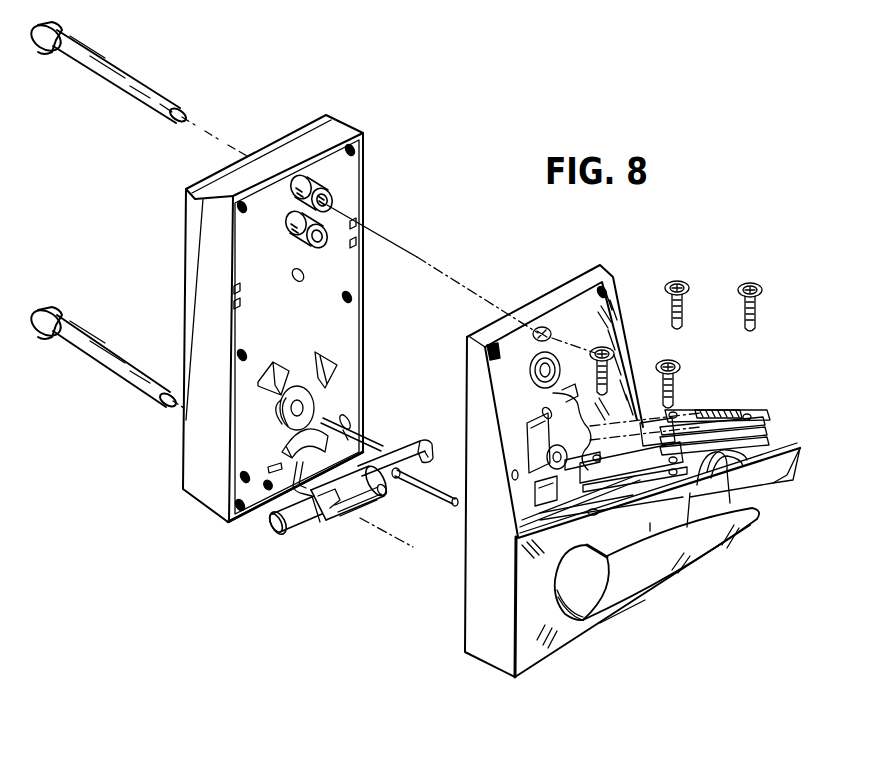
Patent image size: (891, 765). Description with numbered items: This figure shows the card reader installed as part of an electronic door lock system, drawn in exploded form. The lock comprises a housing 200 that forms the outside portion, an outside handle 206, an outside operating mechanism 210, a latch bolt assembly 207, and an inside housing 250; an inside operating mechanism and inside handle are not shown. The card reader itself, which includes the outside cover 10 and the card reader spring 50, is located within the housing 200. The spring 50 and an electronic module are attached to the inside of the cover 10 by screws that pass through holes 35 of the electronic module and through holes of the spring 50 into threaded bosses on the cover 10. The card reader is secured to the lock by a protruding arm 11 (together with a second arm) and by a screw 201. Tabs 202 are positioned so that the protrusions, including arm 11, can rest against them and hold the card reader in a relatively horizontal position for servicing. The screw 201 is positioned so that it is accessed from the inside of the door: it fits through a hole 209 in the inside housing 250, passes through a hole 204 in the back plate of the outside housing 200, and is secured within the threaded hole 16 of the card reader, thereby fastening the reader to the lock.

The cover 10 is at (786, 455).
The protruding arm 11 is at (548, 510).
The threaded hole 16 is at (720, 485).
The holes 35 is at (608, 393).
The card reader spring 50 is at (778, 432).
The housing 200 is at (590, 641).
The screw 201 is at (110, 84).
The tabs 202 is at (510, 488).
The hole 204 is at (546, 328).
The outside handle 206 is at (664, 576).
The latch bolt assembly 207 is at (273, 537).
The hole 209 is at (325, 190).
The outside operating mechanism 210 is at (462, 577).
The inside housing 250 is at (186, 494).